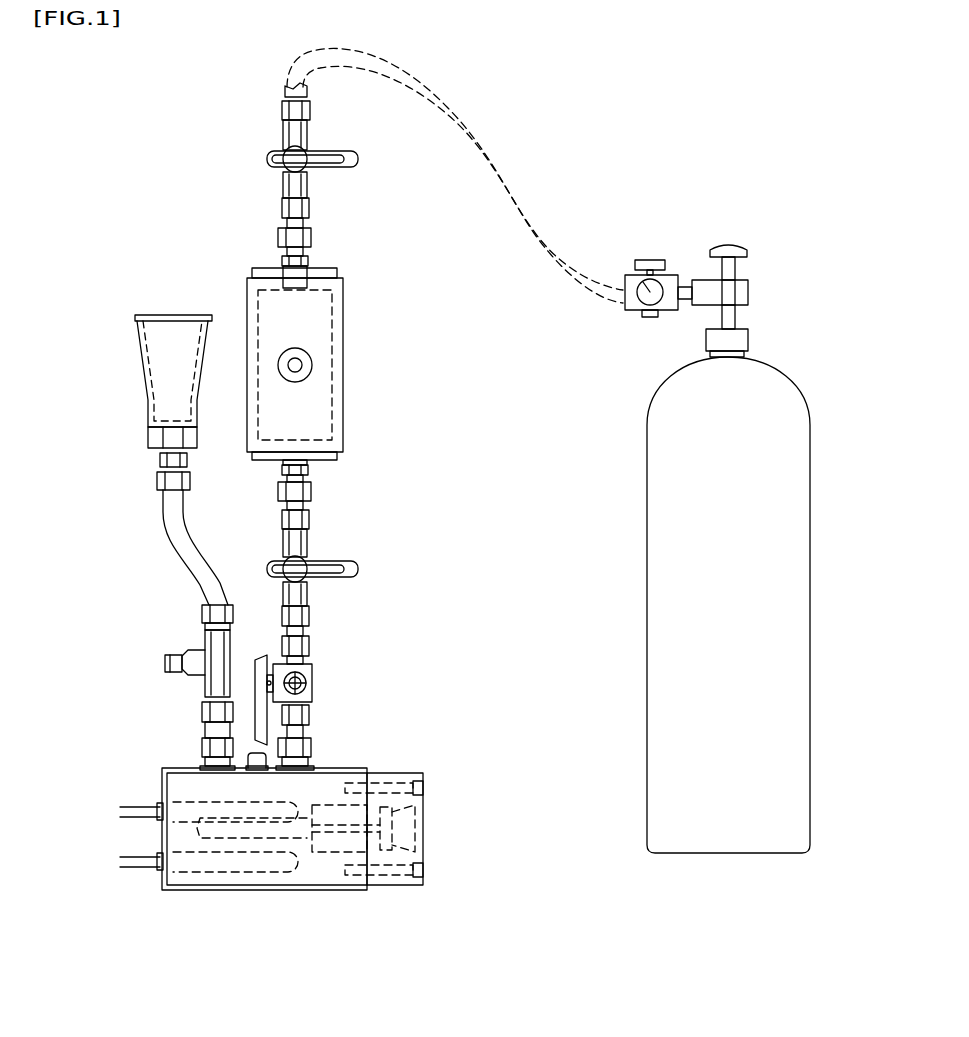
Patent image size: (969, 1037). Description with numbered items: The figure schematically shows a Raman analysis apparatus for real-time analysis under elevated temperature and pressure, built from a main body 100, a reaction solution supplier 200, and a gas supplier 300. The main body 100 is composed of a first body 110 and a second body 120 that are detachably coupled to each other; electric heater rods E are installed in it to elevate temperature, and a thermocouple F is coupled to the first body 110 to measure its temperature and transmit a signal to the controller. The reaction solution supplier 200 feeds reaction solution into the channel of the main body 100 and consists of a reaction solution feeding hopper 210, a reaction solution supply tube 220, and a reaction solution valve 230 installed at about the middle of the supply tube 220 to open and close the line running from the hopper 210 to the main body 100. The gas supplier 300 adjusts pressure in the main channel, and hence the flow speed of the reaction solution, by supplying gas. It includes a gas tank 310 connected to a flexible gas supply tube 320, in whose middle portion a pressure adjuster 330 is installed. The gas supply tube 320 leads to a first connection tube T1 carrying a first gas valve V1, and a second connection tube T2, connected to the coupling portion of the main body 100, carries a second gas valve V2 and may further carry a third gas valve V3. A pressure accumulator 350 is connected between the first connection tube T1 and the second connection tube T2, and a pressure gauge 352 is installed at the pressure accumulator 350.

The main body 100 is at (148, 902).
The first body 110 is at (297, 887).
The second body 120 is at (402, 885).
The reaction solution supplier 200 is at (140, 412).
The reaction solution feeding hopper 210 is at (135, 330).
The reaction solution supply tube 220 is at (185, 558).
The reaction solution valve 230 is at (163, 662).
The gas supplier 300 is at (638, 162).
The gas tank 310 is at (777, 386).
The gas supply tube 320 is at (522, 207).
The pressure adjuster 330 is at (668, 282).
The pressure accumulator 350 is at (345, 402).
The pressure gauge 352 is at (305, 360).
The first gas valve V1 is at (347, 163).
The second gas valve V2 is at (347, 568).
The third gas valve V3 is at (262, 718).
The first connection tube T1 is at (305, 208).
The second connection tube T2 is at (302, 490).
The thermocouple F is at (258, 758).
The electric heater rod E is at (158, 858).